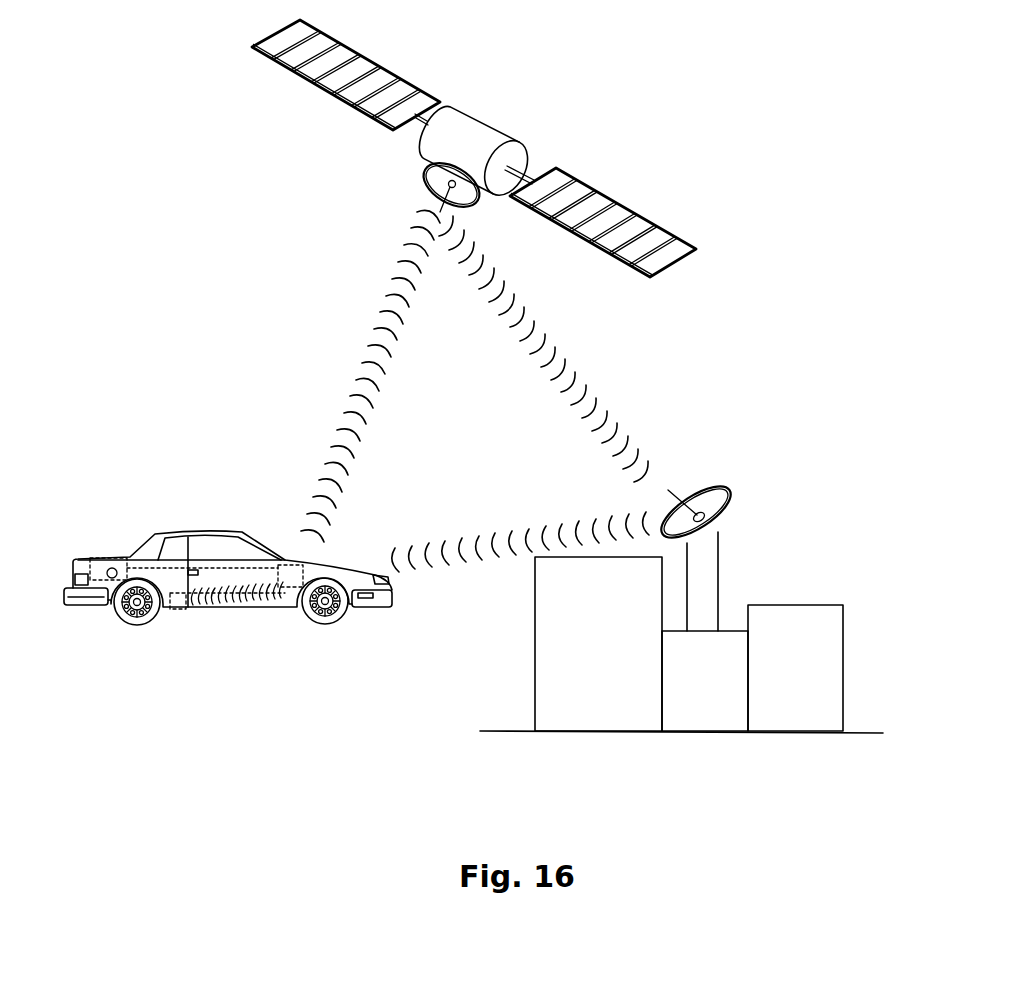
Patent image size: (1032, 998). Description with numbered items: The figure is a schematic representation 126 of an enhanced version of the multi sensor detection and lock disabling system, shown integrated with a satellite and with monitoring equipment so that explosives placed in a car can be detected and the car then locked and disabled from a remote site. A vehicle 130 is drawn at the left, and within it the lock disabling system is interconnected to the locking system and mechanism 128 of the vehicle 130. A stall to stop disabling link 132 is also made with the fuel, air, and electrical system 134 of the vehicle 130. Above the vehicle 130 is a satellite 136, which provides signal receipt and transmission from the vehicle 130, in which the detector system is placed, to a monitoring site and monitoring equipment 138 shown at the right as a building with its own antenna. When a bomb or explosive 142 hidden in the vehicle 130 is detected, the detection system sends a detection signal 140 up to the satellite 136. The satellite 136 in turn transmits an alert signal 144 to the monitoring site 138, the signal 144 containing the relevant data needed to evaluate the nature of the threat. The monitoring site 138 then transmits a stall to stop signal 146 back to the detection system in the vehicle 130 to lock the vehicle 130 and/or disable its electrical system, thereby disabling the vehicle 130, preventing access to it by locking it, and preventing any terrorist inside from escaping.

The schematic representation 126 is at (198, 301).
The locking system and mechanism 128 is at (190, 569).
The vehicle 130 is at (286, 608).
The stall to stop disabling link 132 is at (152, 570).
The fuel, air, and electrical system 134 is at (100, 560).
The satellite 136 is at (493, 128).
The monitoring site and monitoring equipment 138 is at (725, 717).
The detection signal 140 is at (356, 381).
The bomb or explosive 142 is at (180, 605).
The alert signal 144 is at (576, 384).
The stall to stop signal 146 is at (441, 546).